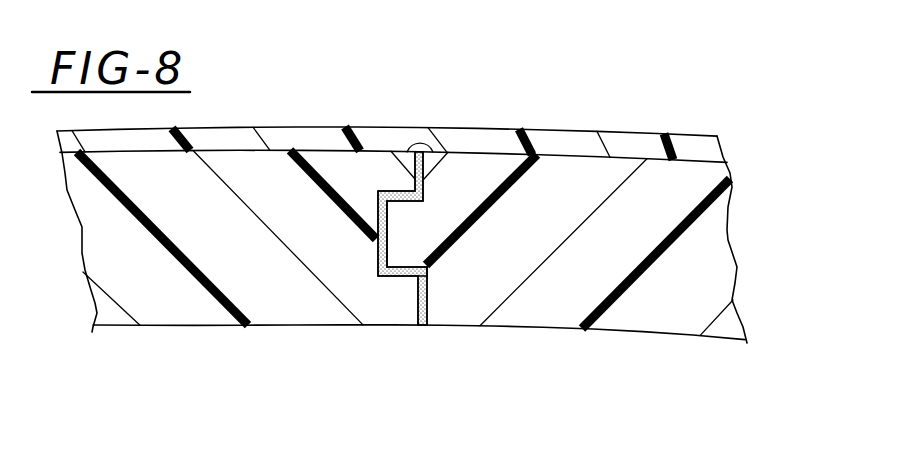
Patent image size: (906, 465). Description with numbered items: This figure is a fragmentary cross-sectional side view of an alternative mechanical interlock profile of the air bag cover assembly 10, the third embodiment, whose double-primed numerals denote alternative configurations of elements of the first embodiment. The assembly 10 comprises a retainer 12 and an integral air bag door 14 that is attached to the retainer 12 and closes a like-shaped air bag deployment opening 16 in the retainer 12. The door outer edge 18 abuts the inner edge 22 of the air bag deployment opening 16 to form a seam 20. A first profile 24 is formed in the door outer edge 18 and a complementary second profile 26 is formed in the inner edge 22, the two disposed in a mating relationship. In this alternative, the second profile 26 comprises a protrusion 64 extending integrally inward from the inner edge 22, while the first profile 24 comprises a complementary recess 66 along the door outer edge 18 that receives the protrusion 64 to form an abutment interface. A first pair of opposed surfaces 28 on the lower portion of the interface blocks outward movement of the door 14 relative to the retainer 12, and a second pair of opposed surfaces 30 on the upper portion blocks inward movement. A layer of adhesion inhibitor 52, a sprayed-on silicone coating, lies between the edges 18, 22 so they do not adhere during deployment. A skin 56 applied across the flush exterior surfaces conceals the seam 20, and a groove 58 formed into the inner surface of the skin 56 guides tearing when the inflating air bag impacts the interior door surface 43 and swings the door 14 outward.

The air bag cover assembly 10 is at (726, 87).
The retainer 12 is at (698, 345).
The air bag door 14 is at (131, 336).
The air bag deployment opening 16 is at (416, 313).
The door outer edge 18 is at (428, 185).
The seam 20 is at (423, 327).
The inner edge of the air bag deployment opening 22 is at (378, 262).
The first profile 24 is at (388, 230).
The second profile 26 is at (377, 198).
The first pair of opposed surfaces 28 is at (400, 275).
The second pair of opposed surfaces 30 is at (413, 165).
The interior door surface 43 is at (223, 325).
The adhesion inhibitor 52 is at (428, 277).
The skin 56 is at (628, 143).
The groove 58 is at (430, 136).
The protrusion 64 is at (408, 213).
The recess 66 is at (388, 248).